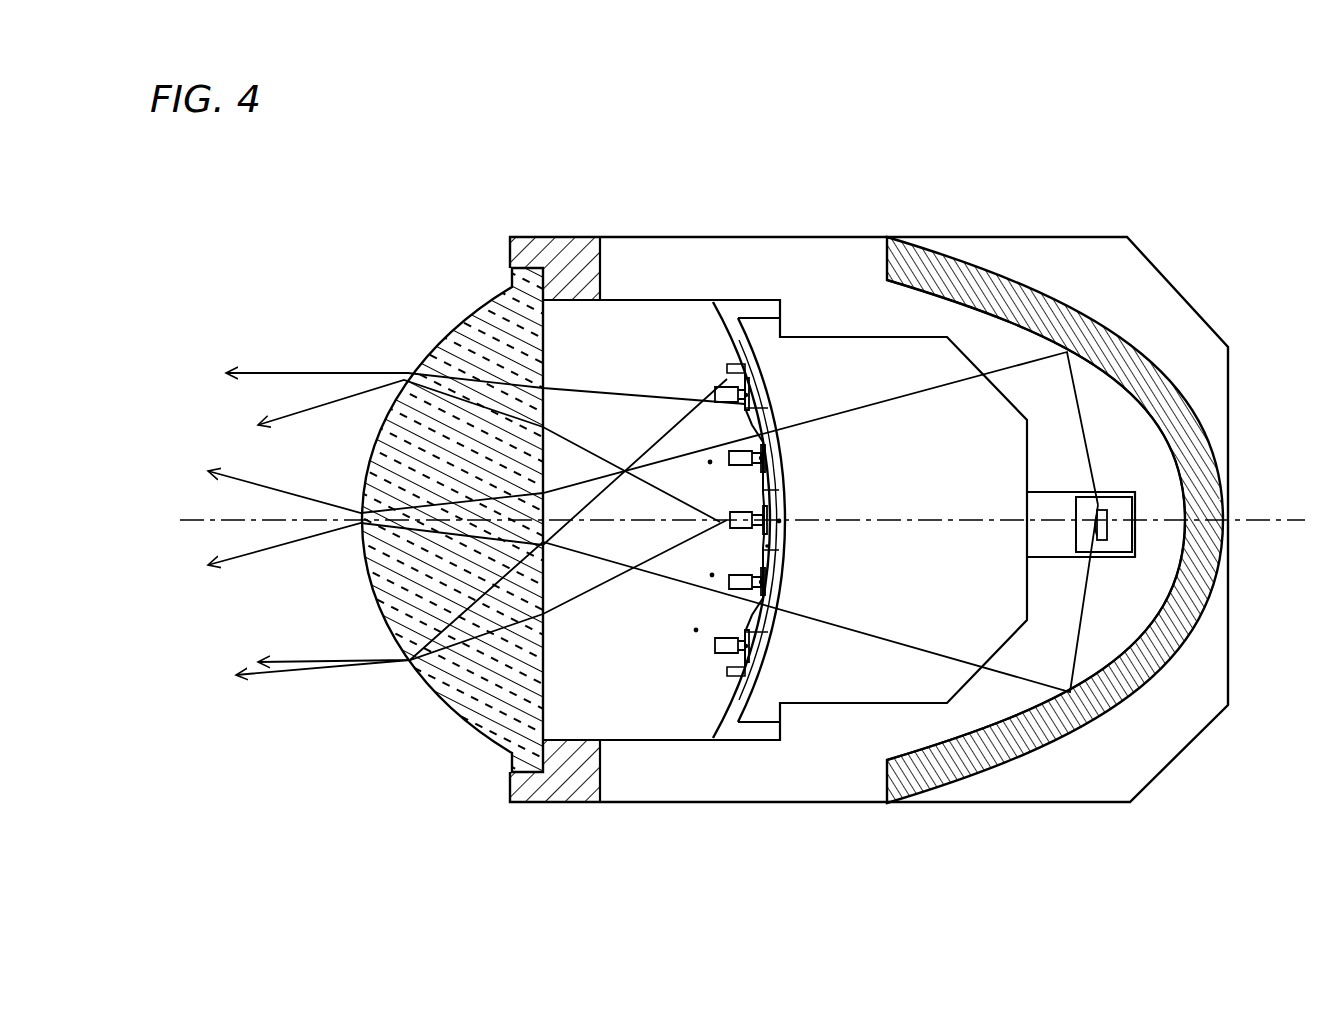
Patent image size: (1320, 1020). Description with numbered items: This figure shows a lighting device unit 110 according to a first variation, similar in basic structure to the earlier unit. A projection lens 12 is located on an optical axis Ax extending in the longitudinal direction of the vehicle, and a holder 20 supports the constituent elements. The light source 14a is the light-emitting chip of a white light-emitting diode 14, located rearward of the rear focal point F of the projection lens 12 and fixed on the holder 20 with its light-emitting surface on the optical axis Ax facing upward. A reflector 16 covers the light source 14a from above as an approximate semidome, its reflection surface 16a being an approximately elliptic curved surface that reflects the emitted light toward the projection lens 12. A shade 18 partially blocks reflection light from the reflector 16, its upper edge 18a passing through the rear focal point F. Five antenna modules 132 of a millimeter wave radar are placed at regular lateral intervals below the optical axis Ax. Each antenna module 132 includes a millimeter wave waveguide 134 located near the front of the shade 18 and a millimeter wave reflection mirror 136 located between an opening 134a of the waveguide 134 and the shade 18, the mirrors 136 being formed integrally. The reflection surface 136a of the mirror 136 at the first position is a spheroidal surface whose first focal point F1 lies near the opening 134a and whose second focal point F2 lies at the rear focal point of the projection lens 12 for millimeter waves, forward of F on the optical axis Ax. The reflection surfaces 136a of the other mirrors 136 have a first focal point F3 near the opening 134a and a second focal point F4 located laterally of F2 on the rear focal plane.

The lighting device unit 110 is at (330, 200).
The holder 20 is at (843, 234).
The projection lens 12 is at (424, 359).
The reflector 16 is at (1054, 297).
The reflection surface 16a is at (1103, 376).
The white light-emitting diode 14 is at (1058, 509).
The light source 14a is at (1133, 531).
The shade 18 is at (779, 404).
The upper edge 18a is at (783, 468).
The antenna module 132 is at (606, 533).
The millimeter wave waveguide 134 is at (751, 548).
The millimeter wave reflection mirror 136 is at (752, 549).
The opening 134a is at (749, 392).
The reflection surface 136a is at (727, 366).
The rear focal point F is at (782, 522).
The point F1 is at (781, 524).
The certain point F2 is at (720, 521).
The point F3 is at (703, 411).
The certain point F4 is at (692, 407).
The optical axis Ax is at (186, 528).